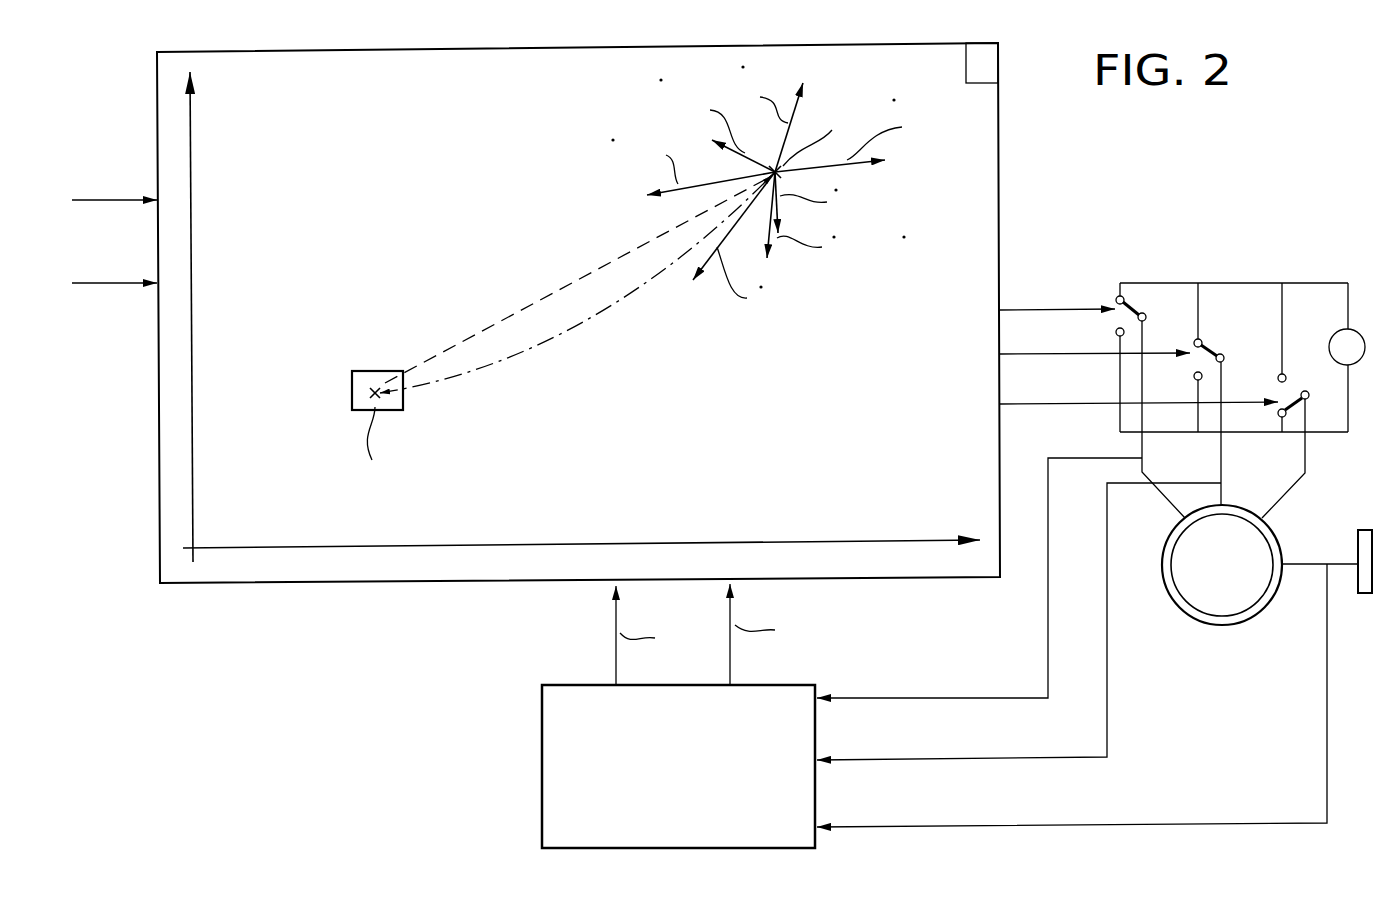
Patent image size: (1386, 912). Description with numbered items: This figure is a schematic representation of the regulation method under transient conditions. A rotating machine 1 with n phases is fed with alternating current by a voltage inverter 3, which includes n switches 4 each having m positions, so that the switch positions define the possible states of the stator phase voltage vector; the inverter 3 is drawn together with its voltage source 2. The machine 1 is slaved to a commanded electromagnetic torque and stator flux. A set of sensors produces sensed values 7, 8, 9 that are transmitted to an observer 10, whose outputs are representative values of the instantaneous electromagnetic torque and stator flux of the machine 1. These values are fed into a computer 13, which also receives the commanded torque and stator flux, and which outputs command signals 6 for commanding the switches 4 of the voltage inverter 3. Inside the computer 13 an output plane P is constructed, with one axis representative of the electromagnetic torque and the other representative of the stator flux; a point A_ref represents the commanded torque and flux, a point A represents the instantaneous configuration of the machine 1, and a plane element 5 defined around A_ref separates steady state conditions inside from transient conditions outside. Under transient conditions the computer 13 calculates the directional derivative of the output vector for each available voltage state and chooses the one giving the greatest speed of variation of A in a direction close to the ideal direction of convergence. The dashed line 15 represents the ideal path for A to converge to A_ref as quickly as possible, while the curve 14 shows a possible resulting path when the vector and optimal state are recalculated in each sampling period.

The rotating machine 1 is at (1225, 626).
The DC voltage source 2 is at (1352, 328).
The voltage inverter 3 is at (1243, 281).
The switches 4 is at (1133, 295).
The plane element 5 is at (375, 372).
The command signals 6 is at (1042, 407).
The sensed value 7 is at (920, 697).
The sensed value 8 is at (963, 757).
The sensed value 9 is at (995, 825).
The observer 10 is at (570, 780).
The computer 13 is at (980, 152).
The curve 14 is at (557, 332).
The dashed line 15 is at (497, 328).